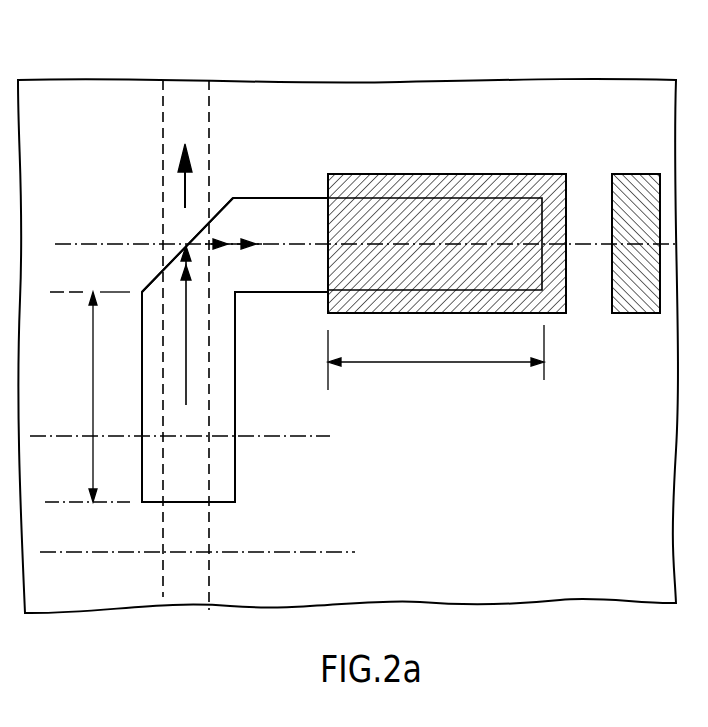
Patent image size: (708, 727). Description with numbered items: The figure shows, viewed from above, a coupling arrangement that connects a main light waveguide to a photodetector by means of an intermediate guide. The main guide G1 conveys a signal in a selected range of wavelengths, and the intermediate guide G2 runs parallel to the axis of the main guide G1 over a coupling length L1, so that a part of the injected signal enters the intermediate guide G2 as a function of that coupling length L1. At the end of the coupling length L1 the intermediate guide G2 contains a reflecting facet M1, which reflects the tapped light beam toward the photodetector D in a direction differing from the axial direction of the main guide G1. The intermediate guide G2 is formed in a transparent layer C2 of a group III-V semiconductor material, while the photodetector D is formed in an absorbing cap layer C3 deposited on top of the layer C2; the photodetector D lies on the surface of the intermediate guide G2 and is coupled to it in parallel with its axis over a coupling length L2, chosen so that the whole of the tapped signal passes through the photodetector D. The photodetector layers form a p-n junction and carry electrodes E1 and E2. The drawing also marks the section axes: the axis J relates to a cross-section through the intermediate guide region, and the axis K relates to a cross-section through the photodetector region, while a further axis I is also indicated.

The main guide G1 is at (181, 107).
The intermediate guide G2 is at (290, 208).
The reflecting facet M1 is at (165, 252).
The photodetector D is at (453, 166).
The electrode E1 is at (508, 193).
The electrode E2 is at (636, 182).
The layer C2 is at (230, 492).
The cap layer C3 is at (571, 352).
The coupling length L1 is at (87, 397).
The coupling length L2 is at (436, 368).
The axis K-K' K is at (375, 237).
The axis J-J' J is at (174, 453).
The section line I-I' I is at (195, 572).